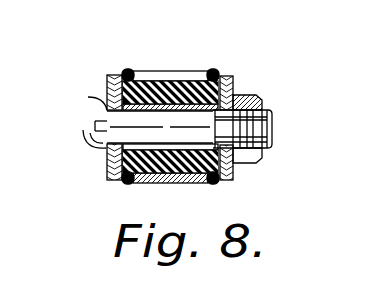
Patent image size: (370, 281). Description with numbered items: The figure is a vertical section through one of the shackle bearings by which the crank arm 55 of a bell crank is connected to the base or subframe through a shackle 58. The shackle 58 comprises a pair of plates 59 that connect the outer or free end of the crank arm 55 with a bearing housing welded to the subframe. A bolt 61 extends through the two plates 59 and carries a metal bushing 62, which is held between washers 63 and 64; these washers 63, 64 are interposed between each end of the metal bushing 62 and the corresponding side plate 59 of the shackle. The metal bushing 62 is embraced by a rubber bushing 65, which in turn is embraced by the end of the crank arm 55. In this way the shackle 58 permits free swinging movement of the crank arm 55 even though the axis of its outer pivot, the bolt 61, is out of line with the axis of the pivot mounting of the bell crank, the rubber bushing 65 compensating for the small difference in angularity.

The crank arm 55 is at (148, 79).
The shackle 58 is at (182, 120).
The plates 59 is at (110, 77).
The bolt 61 is at (273, 127).
The metal bushing 62 is at (88, 97).
The washer 63 is at (227, 76).
The washer 64 is at (250, 98).
The rubber bushing 65 is at (129, 69).